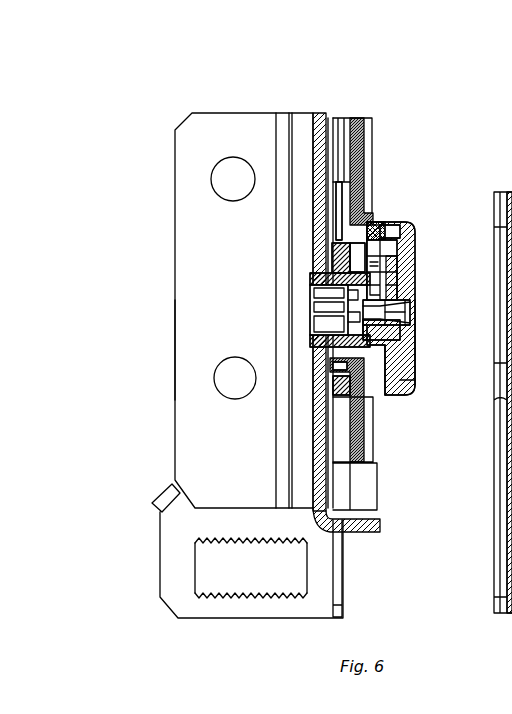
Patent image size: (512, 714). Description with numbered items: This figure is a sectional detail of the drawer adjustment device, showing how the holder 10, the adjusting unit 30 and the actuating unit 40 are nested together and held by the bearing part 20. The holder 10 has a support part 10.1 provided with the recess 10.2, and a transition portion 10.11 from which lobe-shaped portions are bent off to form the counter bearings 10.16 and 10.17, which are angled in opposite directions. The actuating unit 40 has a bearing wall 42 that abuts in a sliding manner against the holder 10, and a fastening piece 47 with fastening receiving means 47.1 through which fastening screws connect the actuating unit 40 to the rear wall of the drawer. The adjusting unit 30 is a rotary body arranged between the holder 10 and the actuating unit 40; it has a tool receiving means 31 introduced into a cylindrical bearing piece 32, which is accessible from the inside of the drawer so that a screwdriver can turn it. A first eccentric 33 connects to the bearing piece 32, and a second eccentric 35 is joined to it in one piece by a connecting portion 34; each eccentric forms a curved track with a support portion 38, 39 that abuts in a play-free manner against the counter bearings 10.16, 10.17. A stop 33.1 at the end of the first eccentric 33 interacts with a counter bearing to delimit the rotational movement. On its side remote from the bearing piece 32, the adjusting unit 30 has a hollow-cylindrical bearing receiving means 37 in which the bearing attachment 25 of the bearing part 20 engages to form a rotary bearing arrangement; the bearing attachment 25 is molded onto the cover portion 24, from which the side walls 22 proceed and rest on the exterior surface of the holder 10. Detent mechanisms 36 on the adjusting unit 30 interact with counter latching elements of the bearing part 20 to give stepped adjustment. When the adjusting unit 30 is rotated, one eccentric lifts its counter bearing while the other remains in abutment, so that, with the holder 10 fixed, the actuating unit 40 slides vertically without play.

The holder 10 is at (345, 112).
The support part 10.1 is at (172, 568).
The recess 10.2 is at (212, 585).
The transition portion 10.11 is at (355, 140).
The counter bearing 10.16 is at (380, 226).
The counter bearing 10.17 is at (354, 365).
The bearing part 20 is at (418, 347).
The side walls 22 is at (392, 228).
The cover portion 24 is at (410, 275).
The bearing attachment 25 is at (400, 305).
The adjusting unit 30 is at (304, 309).
The tool receiving means 31 is at (310, 300).
The bearing piece 32 is at (312, 276).
The first eccentric 33 is at (320, 248).
The stop 33.1 is at (343, 380).
The connecting portion 34 is at (386, 313).
The second eccentric 35 is at (400, 392).
The detent mechanisms 36 is at (405, 358).
The bearing receiving means 37 is at (366, 326).
The support portion 38 is at (370, 226).
The support portion 39 is at (336, 371).
The actuating unit 40 is at (170, 369).
The bearing wall 42 is at (318, 141).
The fastening piece 47 is at (185, 143).
The fastening receiving means 47.1 is at (222, 179).